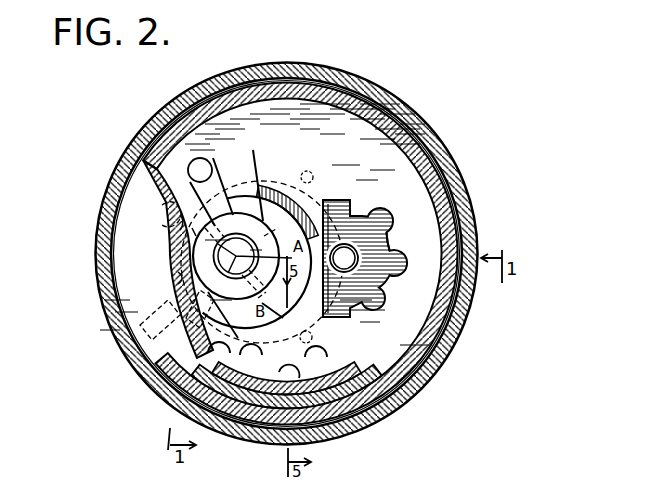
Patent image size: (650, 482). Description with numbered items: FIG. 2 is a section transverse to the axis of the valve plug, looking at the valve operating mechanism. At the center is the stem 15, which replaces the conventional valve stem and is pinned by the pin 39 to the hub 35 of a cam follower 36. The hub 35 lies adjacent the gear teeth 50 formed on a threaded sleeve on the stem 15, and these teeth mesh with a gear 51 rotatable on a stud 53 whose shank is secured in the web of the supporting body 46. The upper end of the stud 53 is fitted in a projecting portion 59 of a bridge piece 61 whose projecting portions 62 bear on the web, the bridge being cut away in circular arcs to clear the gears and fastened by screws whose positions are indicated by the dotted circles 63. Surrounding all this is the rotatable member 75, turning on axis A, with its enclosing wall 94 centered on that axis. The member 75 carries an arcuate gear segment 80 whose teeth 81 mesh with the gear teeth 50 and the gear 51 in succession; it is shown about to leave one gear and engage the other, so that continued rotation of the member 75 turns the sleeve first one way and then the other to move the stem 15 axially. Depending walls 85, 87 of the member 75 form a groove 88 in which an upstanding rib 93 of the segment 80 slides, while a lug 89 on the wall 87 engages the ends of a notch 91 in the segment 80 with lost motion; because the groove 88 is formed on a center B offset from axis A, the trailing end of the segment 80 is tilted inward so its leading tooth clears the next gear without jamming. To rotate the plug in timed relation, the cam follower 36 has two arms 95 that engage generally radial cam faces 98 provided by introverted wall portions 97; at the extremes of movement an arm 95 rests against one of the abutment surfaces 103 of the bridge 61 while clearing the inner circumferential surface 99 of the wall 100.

The stem 15 is at (236, 256).
The hub 35 is at (277, 196).
The cam follower 36 is at (178, 226).
The pin 39 is at (236, 256).
The supporting body 46 is at (96, 249).
The gear teeth 50 is at (318, 200).
The gear 51 is at (379, 208).
The stud 53 is at (348, 260).
The projecting portion 59 is at (372, 248).
The bridge piece 61 is at (344, 170).
The projecting portions 62 is at (274, 166).
The dotted circles 63 is at (307, 171).
The rotatable member 75 is at (412, 125).
The gear segment 80 is at (372, 418).
The teeth 81 is at (336, 356).
The depending wall 85 is at (306, 383).
The depending wall 87 is at (421, 382).
The groove 88 is at (221, 430).
The lug 89 is at (258, 440).
The notch 91 is at (240, 425).
The upstanding rib 93 is at (362, 430).
The enclosing wall 94 is at (430, 160).
The arms 95 is at (232, 172).
The introverted wall portions 97 is at (171, 202).
The cam faces 98 is at (162, 119).
The inner circumferential surface 99 is at (178, 276).
The wall 100 is at (188, 237).
The abutment surfaces 103 is at (305, 170).